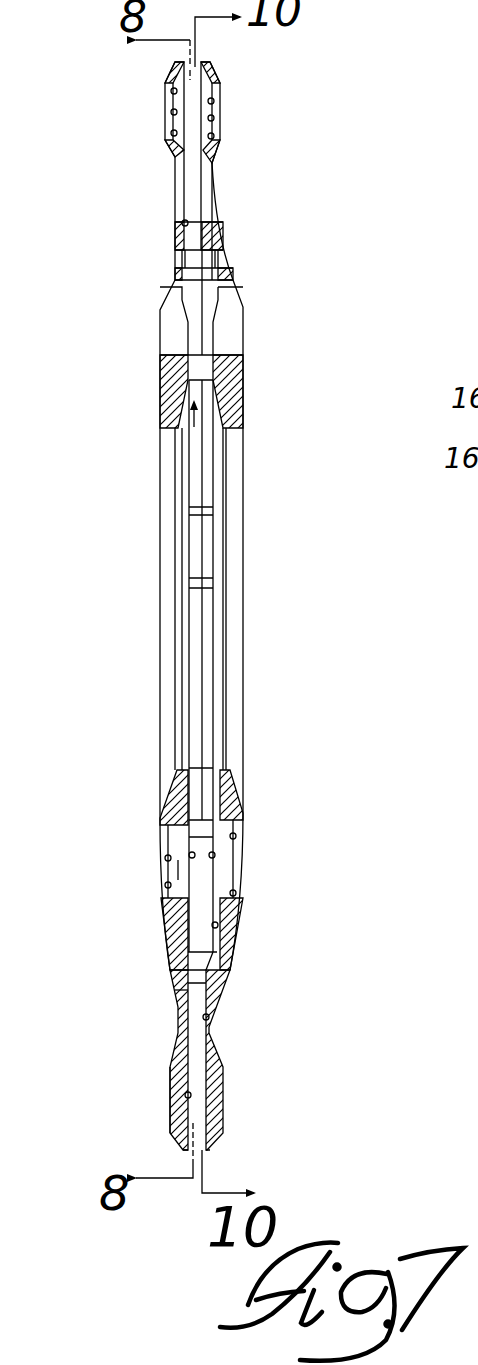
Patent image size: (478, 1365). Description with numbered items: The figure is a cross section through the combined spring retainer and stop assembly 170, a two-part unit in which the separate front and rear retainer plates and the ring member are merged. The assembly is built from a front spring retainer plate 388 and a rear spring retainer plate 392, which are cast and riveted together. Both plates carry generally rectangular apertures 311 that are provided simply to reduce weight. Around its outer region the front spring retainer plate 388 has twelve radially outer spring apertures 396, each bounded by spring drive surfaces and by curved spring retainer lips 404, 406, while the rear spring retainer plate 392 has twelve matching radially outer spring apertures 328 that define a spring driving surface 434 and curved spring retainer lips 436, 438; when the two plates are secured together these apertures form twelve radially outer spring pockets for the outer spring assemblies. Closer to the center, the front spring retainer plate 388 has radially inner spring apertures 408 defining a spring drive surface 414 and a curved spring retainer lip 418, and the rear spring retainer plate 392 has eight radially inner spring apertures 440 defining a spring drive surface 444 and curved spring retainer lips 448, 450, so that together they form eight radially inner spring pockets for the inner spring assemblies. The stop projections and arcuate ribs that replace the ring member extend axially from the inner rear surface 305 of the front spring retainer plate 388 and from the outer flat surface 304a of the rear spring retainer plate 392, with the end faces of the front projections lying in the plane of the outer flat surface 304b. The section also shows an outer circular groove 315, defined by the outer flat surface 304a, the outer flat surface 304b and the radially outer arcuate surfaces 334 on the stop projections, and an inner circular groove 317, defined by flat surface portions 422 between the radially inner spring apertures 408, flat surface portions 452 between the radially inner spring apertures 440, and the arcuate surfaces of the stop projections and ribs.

The combined spring retainer and stop assembly 170 is at (250, 597).
The front spring retainer plate 388 is at (243, 715).
The curved spring retainer lip 404 is at (221, 88).
The curved spring retainer lip 436 is at (170, 90).
The radially outer spring apertures 328 is at (170, 113).
The spring driving surface 434 is at (168, 133).
The curved spring retainer lip 438 is at (221, 104).
The radially outer spring apertures 396 is at (221, 118).
The curved spring retainer lip 406 is at (221, 134).
The generally rectangular apertures 311 is at (213, 166).
The radially outer arcuate surfaces 334 is at (185, 224).
The inner circular groove 317 is at (194, 427).
The curved spring retainer lip 450 is at (167, 835).
The flat surface portions 452 is at (190, 852).
The radially inner spring apertures 440 is at (166, 858).
The spring drive surface 444 is at (178, 870).
The curved spring retainer lip 448 is at (166, 886).
The curved spring retainer lip 418 is at (243, 810).
The radially inner spring apertures 408 is at (235, 836).
The flat surface portions 422 is at (214, 857).
The spring drive surface 414 is at (235, 893).
The inner rear surface 305 is at (217, 924).
The outer flat surface 304b is at (209, 1022).
The rear spring retainer plate 392 is at (170, 1078).
The outer flat surface 304a is at (189, 1094).
The outer circular groove 315 is at (208, 1154).